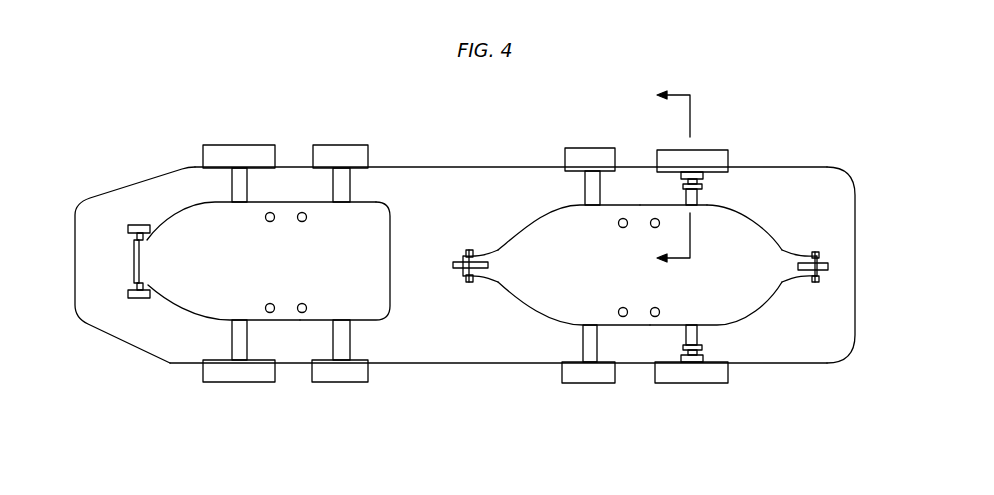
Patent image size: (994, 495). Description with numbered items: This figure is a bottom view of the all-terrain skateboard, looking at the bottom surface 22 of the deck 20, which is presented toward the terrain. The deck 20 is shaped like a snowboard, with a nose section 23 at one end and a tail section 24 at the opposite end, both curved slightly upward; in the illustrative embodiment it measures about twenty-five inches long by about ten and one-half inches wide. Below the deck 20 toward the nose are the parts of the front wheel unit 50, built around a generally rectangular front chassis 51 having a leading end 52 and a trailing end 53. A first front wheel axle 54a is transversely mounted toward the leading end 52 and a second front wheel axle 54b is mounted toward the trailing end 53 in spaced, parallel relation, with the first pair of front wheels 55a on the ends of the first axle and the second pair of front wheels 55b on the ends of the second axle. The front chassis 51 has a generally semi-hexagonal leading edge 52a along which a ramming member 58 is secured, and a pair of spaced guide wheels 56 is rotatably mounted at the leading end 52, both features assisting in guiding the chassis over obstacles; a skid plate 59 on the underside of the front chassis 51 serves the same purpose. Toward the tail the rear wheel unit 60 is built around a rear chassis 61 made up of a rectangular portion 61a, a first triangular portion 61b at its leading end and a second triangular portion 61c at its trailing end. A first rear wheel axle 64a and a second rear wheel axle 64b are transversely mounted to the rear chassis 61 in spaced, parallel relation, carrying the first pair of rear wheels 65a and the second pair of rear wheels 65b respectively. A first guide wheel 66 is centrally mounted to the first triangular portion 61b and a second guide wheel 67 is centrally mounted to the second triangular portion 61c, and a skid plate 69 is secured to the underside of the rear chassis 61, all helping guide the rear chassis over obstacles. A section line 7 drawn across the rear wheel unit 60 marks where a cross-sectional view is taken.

The section line 7- 7 is at (664, 174).
The deck 20 is at (450, 217).
The bottom surface 22 is at (452, 180).
The nose section 23 is at (113, 207).
The tail section 24 is at (787, 177).
The front wheel unit 50 is at (301, 292).
The front chassis 51 is at (297, 312).
The leading end 52 is at (285, 259).
The semi-hexagonal leading edge 52a is at (63, 163).
The trailing end 53 is at (377, 223).
The first front wheel axle 54a is at (227, 333).
The second front wheel axle 54b is at (360, 340).
The first pair of front wheels 55a is at (247, 372).
The second pair of front wheels 55b is at (358, 370).
The guide wheels 56 is at (119, 326).
The ramming member 58 is at (130, 260).
The skid plate 59 is at (187, 262).
The rear wheel unit 60 is at (634, 293).
The rear chassis 61 is at (661, 256).
The rectangular portion 61a is at (640, 215).
The first triangular portion 61b is at (553, 288).
The second triangular portion 61c is at (752, 278).
The first rear wheel axle 64a is at (578, 337).
The second rear wheel axle 64b is at (687, 333).
The first pair of rear wheels 65a is at (605, 376).
The second pair of rear wheels 65b is at (717, 375).
The first guide wheel 66 is at (455, 266).
The second guide wheel 67 is at (828, 265).
The skid plate 69 is at (548, 215).